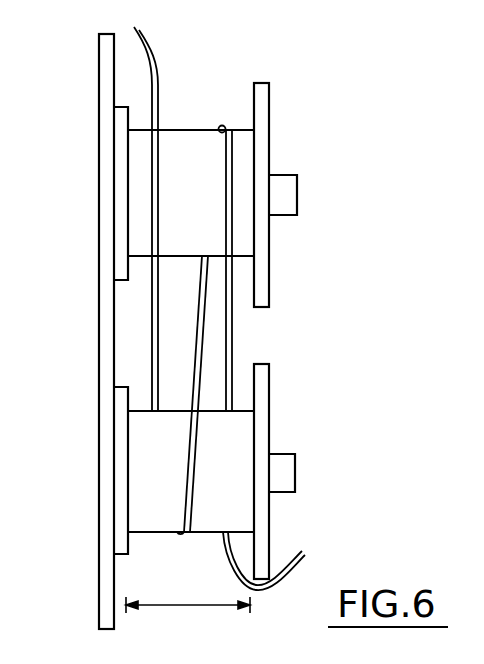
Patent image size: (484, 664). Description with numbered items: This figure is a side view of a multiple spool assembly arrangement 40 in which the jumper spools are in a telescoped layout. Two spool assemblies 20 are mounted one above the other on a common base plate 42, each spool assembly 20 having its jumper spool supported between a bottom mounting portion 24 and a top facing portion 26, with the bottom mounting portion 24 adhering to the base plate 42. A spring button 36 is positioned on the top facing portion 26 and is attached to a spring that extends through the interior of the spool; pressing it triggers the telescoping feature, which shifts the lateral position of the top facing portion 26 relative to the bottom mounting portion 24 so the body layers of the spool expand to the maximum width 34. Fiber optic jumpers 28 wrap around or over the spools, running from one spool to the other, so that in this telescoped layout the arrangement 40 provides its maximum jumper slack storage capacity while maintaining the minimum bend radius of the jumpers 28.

The spool assembly 20 is at (248, 331).
The bottom mounting portion 24 is at (120, 257).
The top facing portion 26 is at (270, 278).
The fiber optic jumpers 28 is at (158, 68).
The maximum width 34 is at (185, 608).
The spring button 36 is at (298, 192).
The multiple spool assembly arrangement 40 is at (363, 85).
The base plate 42 is at (97, 199).